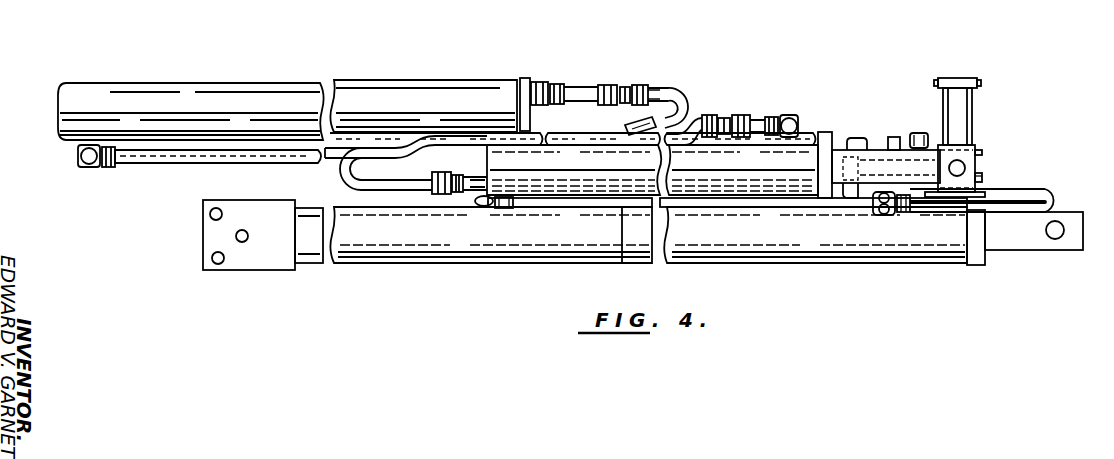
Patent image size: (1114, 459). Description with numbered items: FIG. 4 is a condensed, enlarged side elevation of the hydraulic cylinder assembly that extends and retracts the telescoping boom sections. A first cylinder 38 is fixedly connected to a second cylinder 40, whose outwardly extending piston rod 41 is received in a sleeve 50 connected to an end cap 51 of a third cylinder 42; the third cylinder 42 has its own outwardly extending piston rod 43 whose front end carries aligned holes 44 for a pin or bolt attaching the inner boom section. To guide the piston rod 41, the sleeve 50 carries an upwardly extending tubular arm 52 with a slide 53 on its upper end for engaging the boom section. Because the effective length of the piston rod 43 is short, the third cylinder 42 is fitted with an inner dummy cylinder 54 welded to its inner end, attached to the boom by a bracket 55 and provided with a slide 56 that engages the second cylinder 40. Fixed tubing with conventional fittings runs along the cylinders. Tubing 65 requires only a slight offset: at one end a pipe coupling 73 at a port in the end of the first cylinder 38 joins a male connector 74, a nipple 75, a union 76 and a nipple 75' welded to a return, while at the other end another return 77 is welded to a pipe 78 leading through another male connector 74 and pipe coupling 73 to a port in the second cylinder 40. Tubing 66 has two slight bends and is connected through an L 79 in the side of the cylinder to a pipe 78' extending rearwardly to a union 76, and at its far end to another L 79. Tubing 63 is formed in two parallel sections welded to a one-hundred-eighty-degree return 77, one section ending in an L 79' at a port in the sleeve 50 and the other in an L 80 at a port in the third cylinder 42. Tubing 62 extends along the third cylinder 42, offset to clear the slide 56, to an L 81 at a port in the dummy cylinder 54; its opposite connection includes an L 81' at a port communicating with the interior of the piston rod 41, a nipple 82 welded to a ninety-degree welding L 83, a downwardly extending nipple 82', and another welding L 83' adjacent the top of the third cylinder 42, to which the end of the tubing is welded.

The first cylinder 38 is at (428, 83).
The tubing 65 is at (415, 142).
The tubing 66 is at (243, 157).
The pipe coupling 73 is at (548, 80).
The male connector 74 is at (572, 83).
The nipple 75 is at (593, 82).
The union 76 is at (629, 87).
The nipple 75' is at (672, 81).
The return 77 is at (341, 180).
The pipe 78' is at (742, 106).
The L 79 is at (433, 141).
The second cylinder 40 is at (641, 176).
The slide 53 is at (948, 78).
The welding L 83 is at (840, 155).
The nipple 82 is at (886, 146).
The L 81' is at (918, 125).
The arm 52 is at (962, 127).
The sleeve 50 is at (976, 153).
The piston rod 41 is at (979, 173).
The tubing 63 is at (1023, 188).
The nipple 82' is at (870, 170).
The L 79' is at (908, 186).
The L 80 is at (893, 217).
The welding L 83' is at (843, 212).
The end cap 51 is at (973, 266).
The holes 44 is at (1047, 239).
The piston rod 43 is at (1068, 242).
The third cylinder 42 is at (638, 253).
The tubing 62 is at (558, 205).
The slide 56 is at (502, 208).
The L 81 is at (469, 221).
The dummy cylinder 54 is at (497, 258).
The bracket 55 is at (240, 258).
The pipe 78 is at (381, 179).